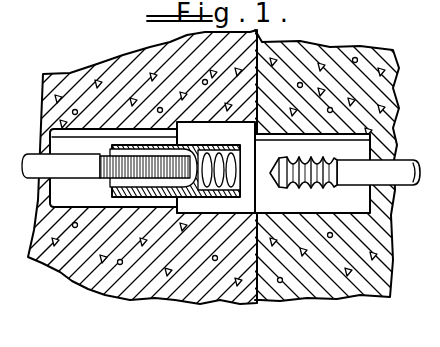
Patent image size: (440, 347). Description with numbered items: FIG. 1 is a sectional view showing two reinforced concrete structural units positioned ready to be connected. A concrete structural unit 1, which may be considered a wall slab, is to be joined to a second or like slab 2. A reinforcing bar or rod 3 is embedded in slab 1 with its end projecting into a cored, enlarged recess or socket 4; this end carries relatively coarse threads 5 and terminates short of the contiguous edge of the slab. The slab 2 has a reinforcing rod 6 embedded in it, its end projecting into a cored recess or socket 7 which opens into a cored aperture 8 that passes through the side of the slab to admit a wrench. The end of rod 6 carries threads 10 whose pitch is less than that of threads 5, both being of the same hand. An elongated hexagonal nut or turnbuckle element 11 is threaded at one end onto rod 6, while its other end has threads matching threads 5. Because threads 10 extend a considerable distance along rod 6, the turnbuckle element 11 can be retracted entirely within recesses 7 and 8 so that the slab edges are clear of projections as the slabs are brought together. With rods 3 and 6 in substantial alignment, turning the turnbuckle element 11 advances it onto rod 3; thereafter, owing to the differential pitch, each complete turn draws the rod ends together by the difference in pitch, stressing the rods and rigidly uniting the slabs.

The concrete structural unit 1 is at (326, 292).
The second slab 2 is at (92, 284).
The reinforcing rod 3 is at (407, 187).
The recess or socket 4 is at (308, 205).
The threads 5 is at (314, 157).
The reinforcing rod 6 is at (68, 174).
The recess or socket 7 is at (98, 211).
The cored aperture 8 is at (213, 213).
The threads 10 is at (109, 145).
The turnbuckle element 11 is at (204, 140).